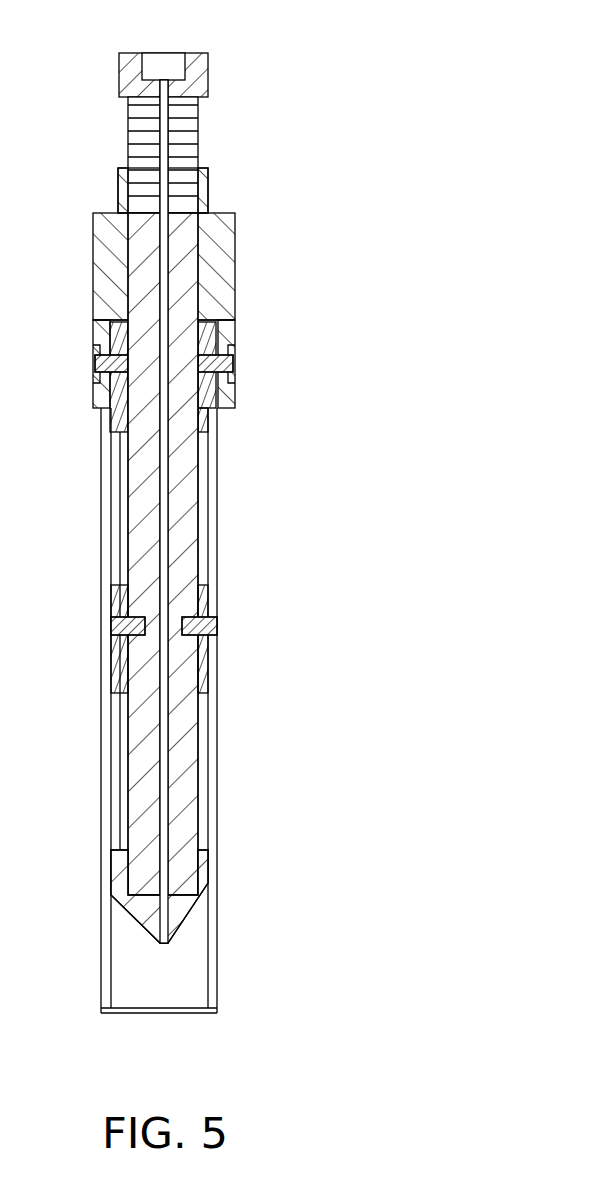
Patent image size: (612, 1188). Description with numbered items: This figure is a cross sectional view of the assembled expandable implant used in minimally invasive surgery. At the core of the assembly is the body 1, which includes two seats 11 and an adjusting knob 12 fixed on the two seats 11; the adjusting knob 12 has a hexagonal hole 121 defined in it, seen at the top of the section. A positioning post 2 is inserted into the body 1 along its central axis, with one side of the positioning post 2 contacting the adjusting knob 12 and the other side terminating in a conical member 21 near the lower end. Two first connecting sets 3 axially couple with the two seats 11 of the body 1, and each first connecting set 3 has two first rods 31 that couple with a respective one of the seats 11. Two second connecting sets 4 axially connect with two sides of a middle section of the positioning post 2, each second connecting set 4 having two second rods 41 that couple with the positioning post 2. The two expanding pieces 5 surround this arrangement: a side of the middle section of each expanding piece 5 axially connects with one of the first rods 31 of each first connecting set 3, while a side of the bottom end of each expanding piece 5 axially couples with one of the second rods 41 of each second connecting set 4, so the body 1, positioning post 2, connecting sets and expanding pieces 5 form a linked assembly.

The body 1 is at (217, 264).
The seat 11 is at (226, 335).
The adjusting knob 12 is at (198, 79).
The hexagonal hole 121 is at (167, 60).
The positioning post 2 is at (180, 775).
The conical member 21 is at (180, 910).
The first connecting set 3 is at (358, 429).
The first rod 31 is at (205, 413).
The second connecting set 4 is at (347, 608).
The second rod 41 is at (203, 660).
The expanding piece 5 is at (182, 982).